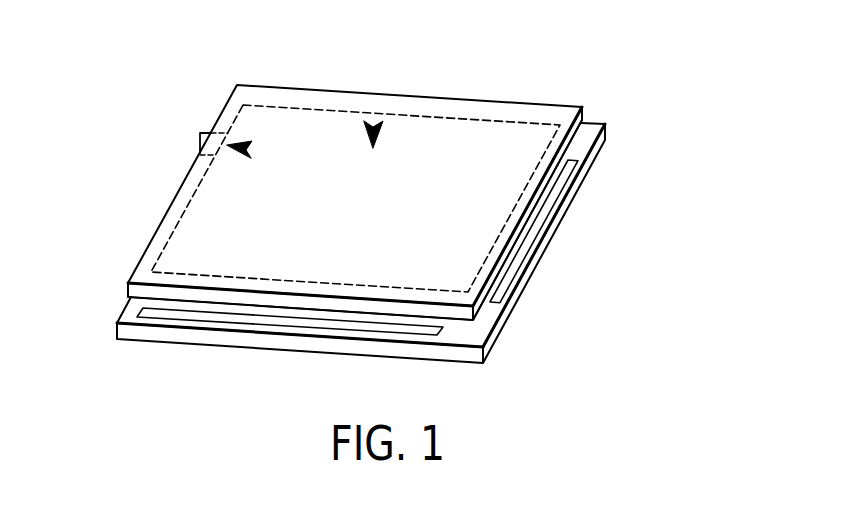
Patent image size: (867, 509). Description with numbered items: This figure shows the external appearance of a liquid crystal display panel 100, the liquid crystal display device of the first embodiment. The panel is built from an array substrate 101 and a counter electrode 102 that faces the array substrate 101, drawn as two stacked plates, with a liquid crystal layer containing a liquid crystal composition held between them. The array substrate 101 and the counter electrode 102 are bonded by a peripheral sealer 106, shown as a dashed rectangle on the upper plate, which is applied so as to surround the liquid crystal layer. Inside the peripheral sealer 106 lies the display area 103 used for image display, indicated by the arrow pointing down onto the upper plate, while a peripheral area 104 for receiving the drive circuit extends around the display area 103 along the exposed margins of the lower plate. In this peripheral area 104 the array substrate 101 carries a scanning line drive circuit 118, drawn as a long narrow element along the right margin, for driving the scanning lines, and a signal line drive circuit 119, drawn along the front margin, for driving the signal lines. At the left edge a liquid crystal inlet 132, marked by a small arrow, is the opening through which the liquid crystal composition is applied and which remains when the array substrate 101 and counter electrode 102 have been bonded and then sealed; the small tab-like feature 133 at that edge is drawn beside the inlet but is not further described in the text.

The liquid crystal display panel 100 is at (659, 1).
The array substrate 101 is at (597, 119).
The counter electrode 102 is at (556, 104).
The display area 103 is at (374, 122).
The peripheral area 104 is at (587, 133).
The peripheral sealer 106 is at (262, 107).
The scanning line drive circuit 118 is at (523, 256).
The signal line drive circuit 119 is at (270, 320).
The liquid crystal inlet 132 is at (246, 150).
The alignment tab 133 is at (200, 139).